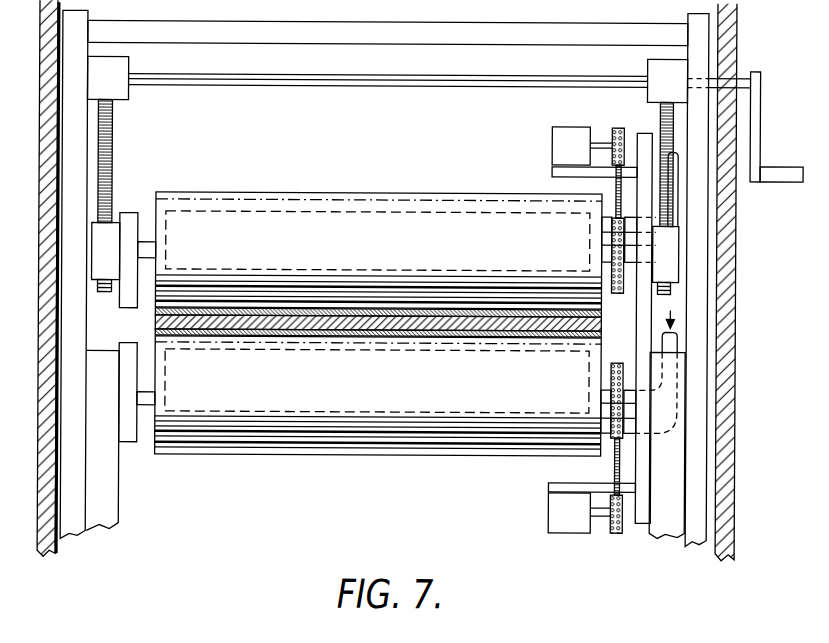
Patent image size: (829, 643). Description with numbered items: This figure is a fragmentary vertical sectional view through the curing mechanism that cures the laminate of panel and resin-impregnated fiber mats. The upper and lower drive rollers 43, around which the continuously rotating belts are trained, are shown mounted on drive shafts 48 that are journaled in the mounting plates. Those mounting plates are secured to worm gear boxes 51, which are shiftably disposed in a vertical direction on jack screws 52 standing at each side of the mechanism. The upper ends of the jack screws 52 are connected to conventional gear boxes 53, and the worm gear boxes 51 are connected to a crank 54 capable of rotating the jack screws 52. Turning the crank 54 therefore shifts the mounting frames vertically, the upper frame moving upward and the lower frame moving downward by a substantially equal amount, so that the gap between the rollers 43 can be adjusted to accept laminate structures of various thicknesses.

The drive roller 43 is at (368, 218).
The drive shaft 48 is at (149, 241).
The worm gear box 51 is at (110, 237).
The jack screw 52 is at (113, 136).
The gear box 53 is at (113, 69).
The crank 54 is at (762, 112).